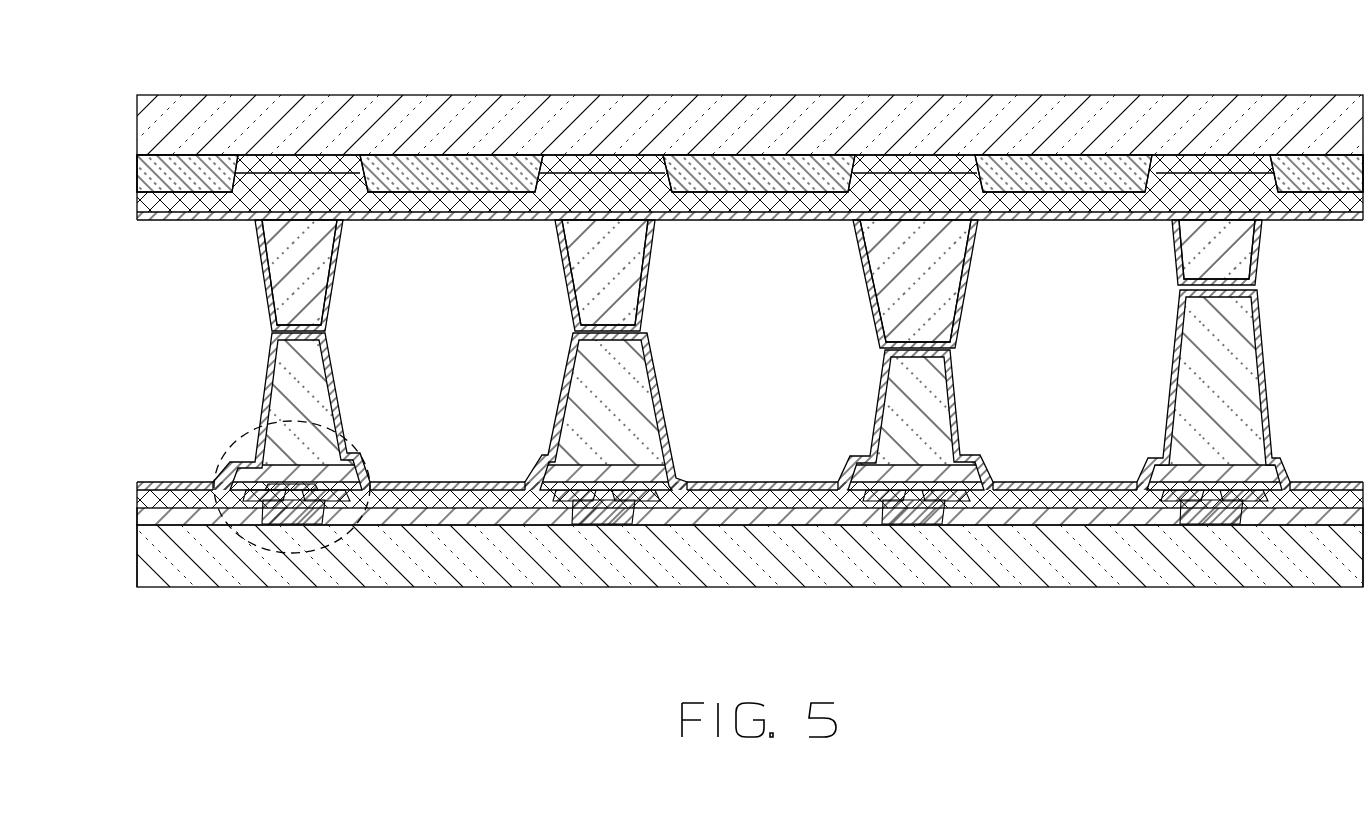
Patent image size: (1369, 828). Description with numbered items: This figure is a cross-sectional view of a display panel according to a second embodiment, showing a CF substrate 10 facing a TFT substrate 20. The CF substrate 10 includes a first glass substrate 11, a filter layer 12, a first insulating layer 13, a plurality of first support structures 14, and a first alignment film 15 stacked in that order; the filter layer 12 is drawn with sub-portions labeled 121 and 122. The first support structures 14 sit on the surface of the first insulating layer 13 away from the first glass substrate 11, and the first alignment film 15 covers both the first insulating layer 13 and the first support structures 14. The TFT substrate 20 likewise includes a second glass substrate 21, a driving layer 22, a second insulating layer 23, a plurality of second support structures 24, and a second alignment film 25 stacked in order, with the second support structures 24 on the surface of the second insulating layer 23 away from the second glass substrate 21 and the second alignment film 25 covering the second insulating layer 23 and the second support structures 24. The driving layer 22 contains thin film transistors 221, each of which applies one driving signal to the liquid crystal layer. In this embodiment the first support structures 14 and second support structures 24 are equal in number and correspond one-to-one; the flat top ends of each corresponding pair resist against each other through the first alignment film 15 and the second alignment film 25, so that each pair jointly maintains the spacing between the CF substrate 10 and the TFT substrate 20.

The CF substrate 10 is at (97, 150).
The first glass substrate 11 is at (150, 122).
The filter layer 12 is at (302, 46).
The color resist unit 121 is at (265, 163).
The black matrix 122 is at (195, 168).
The first insulating layer 13 is at (150, 205).
The first support structure 14 is at (292, 245).
The first alignment film 15 is at (152, 218).
The TFT substrate 20 is at (88, 518).
The second glass substrate 21 is at (155, 572).
The driving layer 22 is at (152, 515).
The thin film transistor 221 is at (340, 535).
The second insulating layer 23 is at (155, 500).
The second support structure 24 is at (295, 410).
The second alignment film 25 is at (185, 484).